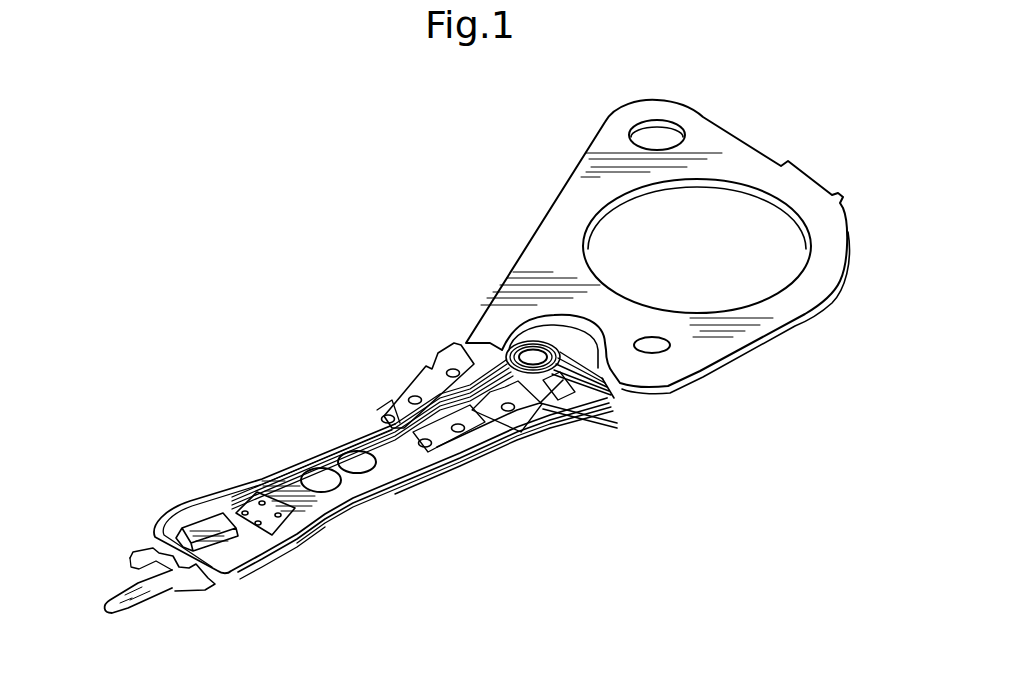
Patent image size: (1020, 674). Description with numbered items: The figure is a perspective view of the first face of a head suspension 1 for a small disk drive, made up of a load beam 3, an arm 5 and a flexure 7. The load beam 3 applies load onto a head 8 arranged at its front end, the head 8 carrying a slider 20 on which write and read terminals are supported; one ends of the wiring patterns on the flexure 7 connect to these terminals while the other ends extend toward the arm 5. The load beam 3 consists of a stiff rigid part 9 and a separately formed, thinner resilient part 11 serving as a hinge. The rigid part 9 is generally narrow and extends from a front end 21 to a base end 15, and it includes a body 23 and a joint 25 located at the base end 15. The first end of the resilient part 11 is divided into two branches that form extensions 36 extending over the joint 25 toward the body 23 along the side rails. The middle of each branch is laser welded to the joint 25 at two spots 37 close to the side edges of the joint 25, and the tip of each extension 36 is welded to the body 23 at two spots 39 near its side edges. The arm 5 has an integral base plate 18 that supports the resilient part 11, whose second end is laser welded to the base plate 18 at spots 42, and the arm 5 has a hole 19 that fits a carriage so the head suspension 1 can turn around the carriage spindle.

The head suspension 1 is at (363, 290).
The load beam 3 is at (340, 431).
The arm 5 is at (658, 229).
The flexure 7 is at (311, 541).
The head 8 is at (200, 510).
The rigid part 9 is at (325, 440).
The resilient part 11 is at (425, 377).
The base end 15 is at (455, 448).
The base plate 18 is at (556, 410).
The hole 19 is at (726, 176).
The slider 20 is at (230, 544).
The front end 21 is at (283, 562).
The body 23 is at (380, 488).
The joint 25 is at (490, 432).
The extensions 36 is at (338, 436).
The spots 37 is at (412, 396).
The spots 39 is at (386, 415).
The spots 42 is at (453, 368).